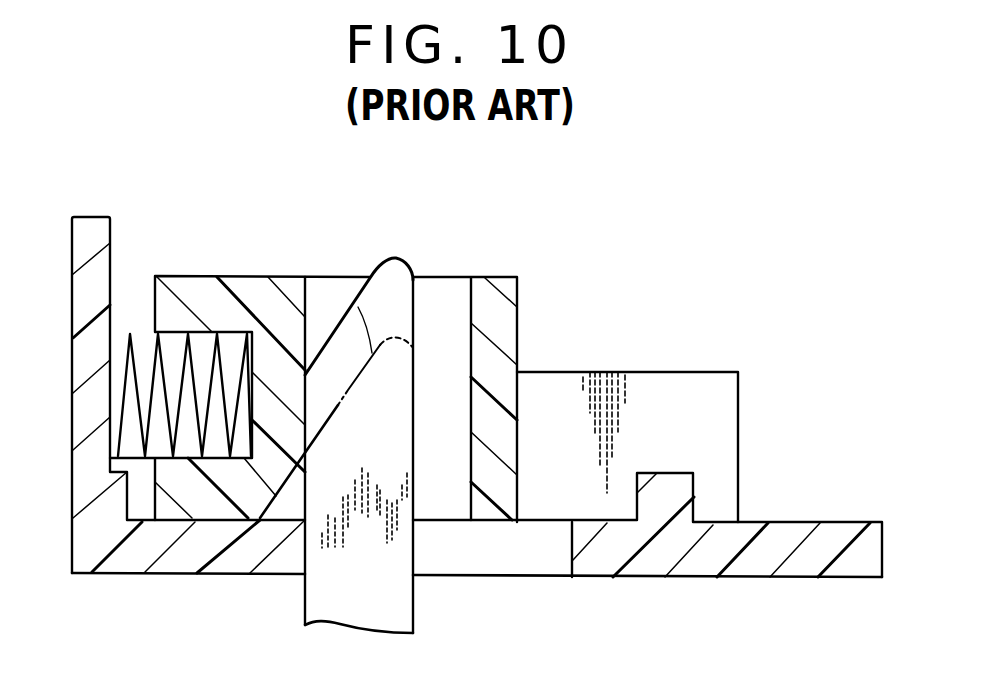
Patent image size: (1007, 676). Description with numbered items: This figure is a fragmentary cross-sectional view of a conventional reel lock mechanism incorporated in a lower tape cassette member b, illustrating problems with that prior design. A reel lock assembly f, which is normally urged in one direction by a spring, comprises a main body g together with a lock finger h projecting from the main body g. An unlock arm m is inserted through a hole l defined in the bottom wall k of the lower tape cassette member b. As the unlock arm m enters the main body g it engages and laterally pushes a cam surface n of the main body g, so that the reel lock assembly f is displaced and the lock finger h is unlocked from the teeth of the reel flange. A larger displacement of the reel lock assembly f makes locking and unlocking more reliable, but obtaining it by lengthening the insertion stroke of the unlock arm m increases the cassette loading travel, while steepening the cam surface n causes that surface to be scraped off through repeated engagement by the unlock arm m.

The lower tape cassette member b is at (73, 304).
The main body g is at (250, 270).
The reel lock assembly f is at (288, 270).
The unlock arm m is at (348, 265).
The cam surface n is at (273, 497).
The lock finger h is at (672, 368).
The bottom wall k is at (805, 530).
The hole l is at (572, 553).